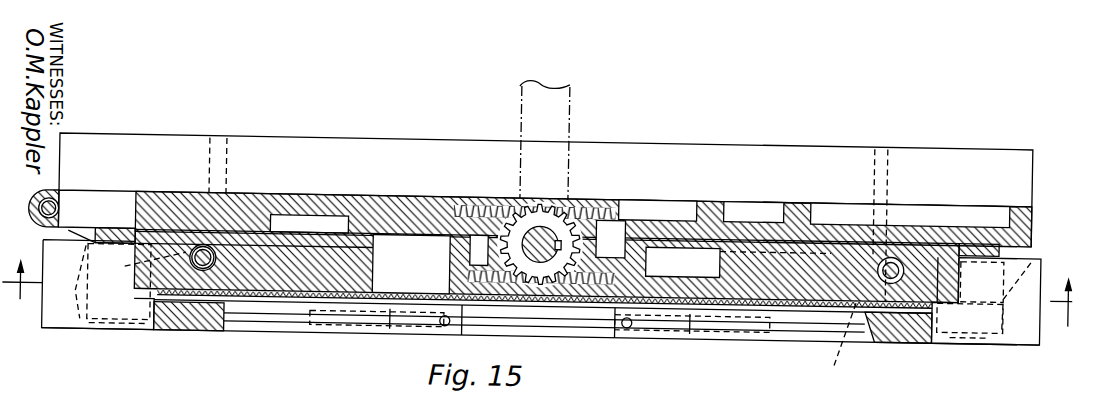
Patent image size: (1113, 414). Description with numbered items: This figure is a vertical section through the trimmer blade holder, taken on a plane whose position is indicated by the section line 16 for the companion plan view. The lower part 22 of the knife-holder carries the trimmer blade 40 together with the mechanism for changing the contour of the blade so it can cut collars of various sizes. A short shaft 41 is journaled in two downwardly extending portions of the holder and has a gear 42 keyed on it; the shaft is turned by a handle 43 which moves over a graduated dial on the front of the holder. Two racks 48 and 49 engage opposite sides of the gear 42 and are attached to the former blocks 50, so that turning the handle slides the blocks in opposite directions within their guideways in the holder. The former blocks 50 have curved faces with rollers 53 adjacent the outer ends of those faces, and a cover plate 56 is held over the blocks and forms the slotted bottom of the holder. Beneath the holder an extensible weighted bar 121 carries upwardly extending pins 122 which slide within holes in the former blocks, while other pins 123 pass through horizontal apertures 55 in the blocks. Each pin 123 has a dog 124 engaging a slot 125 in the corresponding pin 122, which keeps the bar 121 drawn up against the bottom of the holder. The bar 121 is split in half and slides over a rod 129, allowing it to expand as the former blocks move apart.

The section line 16 is at (551, 294).
The lower part of knife-holder 22 is at (946, 202).
The trimmer blade 40 is at (1031, 311).
The short shaft 41 is at (544, 254).
The gear 42 is at (580, 199).
The handle 43 is at (572, 94).
The rack 48 is at (418, 188).
The rack 49 is at (600, 283).
The former block 50 is at (266, 241).
The roller 53 is at (82, 327).
The horizontal aperture 55 is at (228, 287).
The cover plate 56 is at (268, 294).
The extensible weighted bar 121 is at (382, 319).
The pin 122 is at (208, 152).
The pin 123 is at (200, 268).
The dog 124 is at (473, 313).
The slot 125 is at (212, 248).
The rod 129 is at (534, 312).